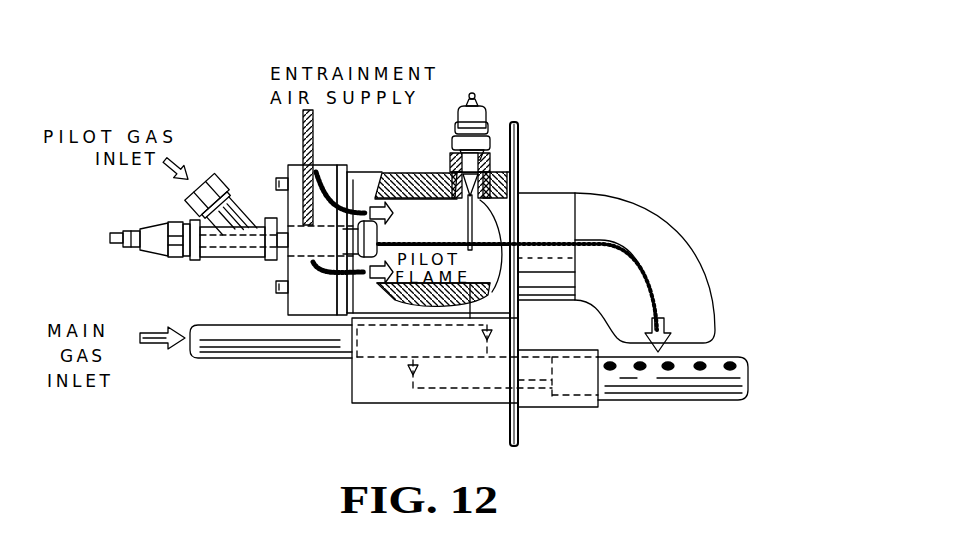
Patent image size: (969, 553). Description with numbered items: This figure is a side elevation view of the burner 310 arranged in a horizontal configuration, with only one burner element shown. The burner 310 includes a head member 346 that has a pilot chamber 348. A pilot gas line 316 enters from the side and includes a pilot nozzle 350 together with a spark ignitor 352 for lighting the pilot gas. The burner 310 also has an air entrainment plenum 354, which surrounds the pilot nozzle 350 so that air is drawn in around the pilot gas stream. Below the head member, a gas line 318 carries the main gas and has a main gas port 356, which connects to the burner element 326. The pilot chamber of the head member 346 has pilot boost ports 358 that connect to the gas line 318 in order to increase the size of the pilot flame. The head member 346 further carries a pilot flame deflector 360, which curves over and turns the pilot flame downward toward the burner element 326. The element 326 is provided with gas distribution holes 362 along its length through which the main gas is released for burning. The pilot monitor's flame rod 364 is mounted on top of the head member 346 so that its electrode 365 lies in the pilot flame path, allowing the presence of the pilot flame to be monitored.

The burner 310 is at (612, 98).
The pilot gas line 316 is at (198, 178).
The gas line 318 is at (267, 362).
The element 326 is at (645, 403).
The head member 346 is at (414, 171).
The pilot chamber 348 is at (413, 214).
The pilot nozzle 350 is at (322, 236).
The spark ignitor 352 is at (119, 231).
The air entrainment plenum 354 is at (306, 290).
The main gas port 356 is at (435, 377).
The pilot boost port 358 is at (472, 318).
The pilot flame deflector 360 is at (677, 233).
The gas distribution hole 362 is at (731, 362).
The flame rod 364 is at (474, 98).
The electrode 365 is at (475, 226).